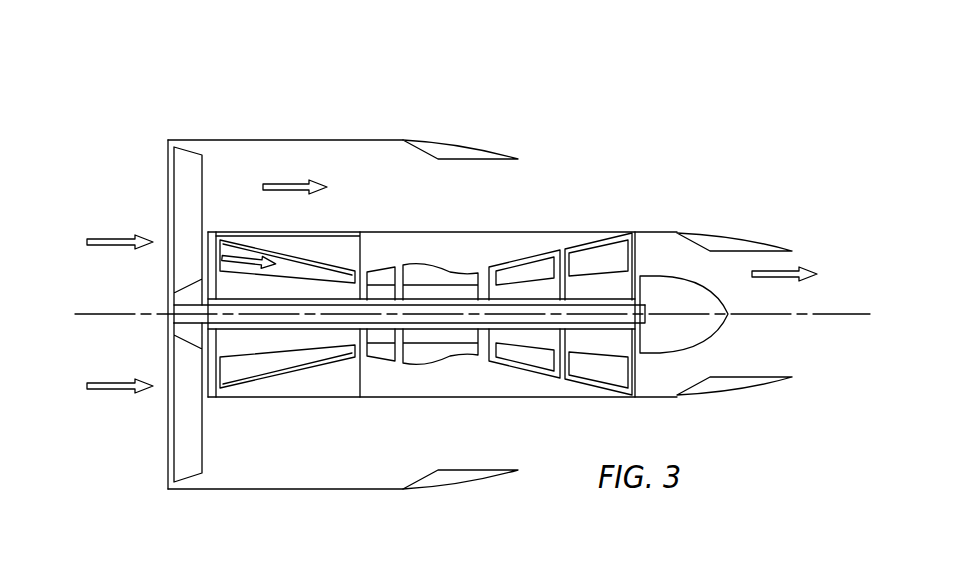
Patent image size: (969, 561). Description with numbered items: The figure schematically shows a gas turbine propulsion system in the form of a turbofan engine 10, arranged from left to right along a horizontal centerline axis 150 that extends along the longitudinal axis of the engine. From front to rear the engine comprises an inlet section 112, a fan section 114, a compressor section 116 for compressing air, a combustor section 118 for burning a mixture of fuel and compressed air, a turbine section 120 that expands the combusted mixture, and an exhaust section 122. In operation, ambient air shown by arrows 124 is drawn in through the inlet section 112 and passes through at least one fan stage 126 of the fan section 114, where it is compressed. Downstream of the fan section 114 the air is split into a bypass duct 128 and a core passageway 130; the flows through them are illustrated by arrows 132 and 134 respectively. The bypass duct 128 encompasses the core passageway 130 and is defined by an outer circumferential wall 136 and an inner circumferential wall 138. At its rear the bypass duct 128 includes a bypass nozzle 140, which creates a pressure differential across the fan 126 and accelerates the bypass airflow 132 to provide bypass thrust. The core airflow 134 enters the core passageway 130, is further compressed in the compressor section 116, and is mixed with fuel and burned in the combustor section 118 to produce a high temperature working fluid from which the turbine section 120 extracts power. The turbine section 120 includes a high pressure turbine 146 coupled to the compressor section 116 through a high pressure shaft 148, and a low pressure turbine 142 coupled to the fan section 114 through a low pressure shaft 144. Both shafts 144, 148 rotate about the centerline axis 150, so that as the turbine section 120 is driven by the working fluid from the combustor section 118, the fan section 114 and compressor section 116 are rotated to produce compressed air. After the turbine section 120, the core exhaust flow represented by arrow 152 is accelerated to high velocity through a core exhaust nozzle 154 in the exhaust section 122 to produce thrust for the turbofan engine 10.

The turbofan engine 10 is at (592, 123).
The inlet section 112 is at (168, 194).
The fan section 114 is at (188, 435).
The compressor section 116 is at (321, 240).
The combustor section 118 is at (428, 380).
The turbine section 120 is at (560, 223).
The exhaust section 122 is at (777, 215).
The arrows 124 is at (112, 247).
The fan stage 126 is at (187, 168).
The bypass duct 128 is at (270, 160).
The core passageway 130 is at (246, 365).
The bypass airflow 132 is at (277, 193).
The core airflow 134 is at (236, 257).
The outer circumferential wall 136 is at (393, 140).
The inner circumferential wall 138 is at (412, 232).
The bypass nozzle 140 is at (503, 155).
The low pressure turbine 142 is at (610, 258).
The low pressure shaft 144 is at (342, 313).
The high pressure turbine 146 is at (520, 271).
The high pressure shaft 148 is at (485, 323).
The centerline axis 150 is at (833, 315).
The core exhaust flow 152 is at (766, 278).
The core exhaust nozzle 154 is at (735, 382).